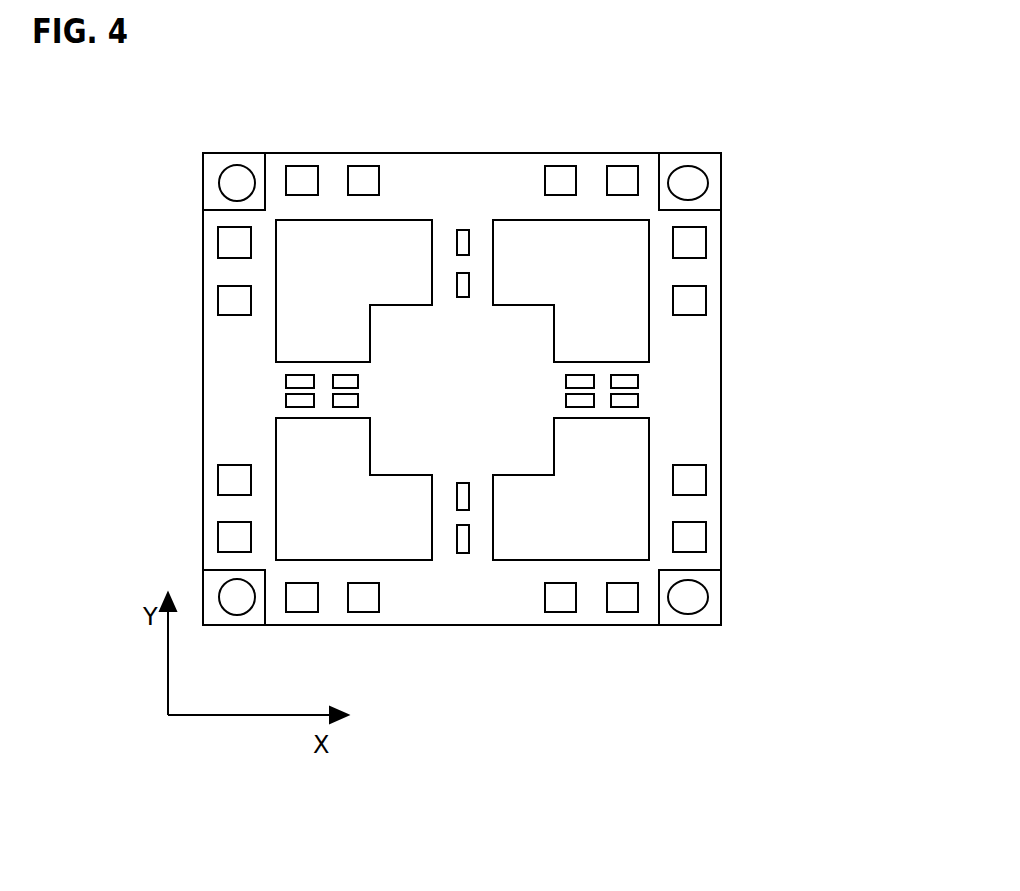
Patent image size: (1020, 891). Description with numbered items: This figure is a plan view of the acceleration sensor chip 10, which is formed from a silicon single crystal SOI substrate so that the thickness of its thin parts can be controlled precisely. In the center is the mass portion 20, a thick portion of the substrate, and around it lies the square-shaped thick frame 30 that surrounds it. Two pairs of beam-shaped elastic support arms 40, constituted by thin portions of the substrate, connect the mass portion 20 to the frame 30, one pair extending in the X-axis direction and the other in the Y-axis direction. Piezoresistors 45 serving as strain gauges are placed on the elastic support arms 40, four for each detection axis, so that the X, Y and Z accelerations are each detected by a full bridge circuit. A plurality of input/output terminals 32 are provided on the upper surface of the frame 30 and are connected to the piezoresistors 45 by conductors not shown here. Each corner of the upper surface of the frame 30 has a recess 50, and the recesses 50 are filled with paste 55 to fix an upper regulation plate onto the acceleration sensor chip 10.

The acceleration sensor chip 10 is at (177, 122).
The mass portion 20 is at (497, 385).
The frame 30 is at (408, 177).
The input/output terminals 32 is at (232, 480).
The elastic support arms 40 is at (291, 367).
The piezoresistors 45 is at (462, 543).
The recesses 50 is at (483, 400).
The paste 55 is at (237, 181).